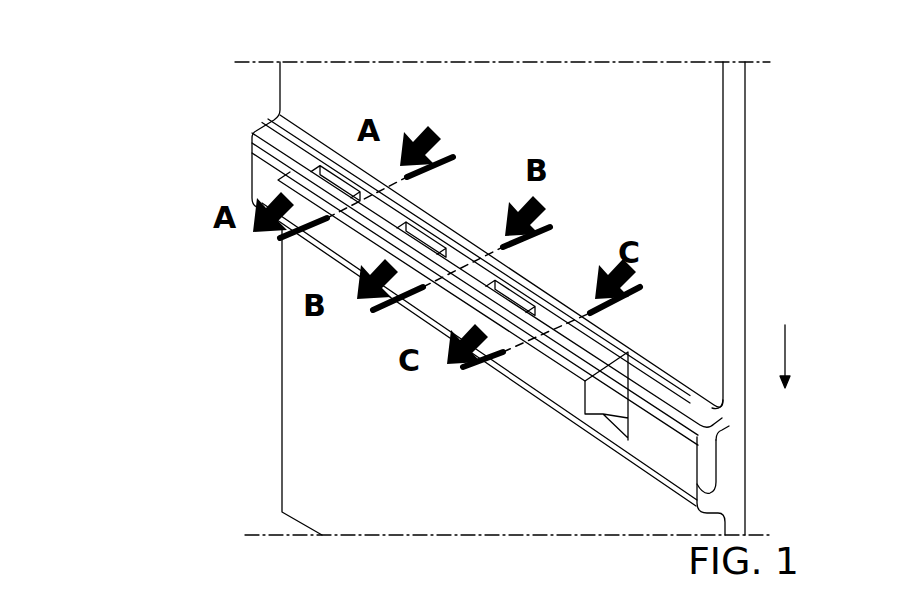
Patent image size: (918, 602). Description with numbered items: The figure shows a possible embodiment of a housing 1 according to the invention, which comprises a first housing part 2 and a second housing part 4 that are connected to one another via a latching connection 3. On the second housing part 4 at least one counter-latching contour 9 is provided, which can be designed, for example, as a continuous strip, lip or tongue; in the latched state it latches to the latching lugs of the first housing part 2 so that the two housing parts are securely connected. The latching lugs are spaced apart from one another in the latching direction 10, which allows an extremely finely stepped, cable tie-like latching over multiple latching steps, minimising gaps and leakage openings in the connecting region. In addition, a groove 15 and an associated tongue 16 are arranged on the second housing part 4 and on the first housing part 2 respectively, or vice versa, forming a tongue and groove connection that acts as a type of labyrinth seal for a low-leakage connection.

The housing 1 is at (766, 121).
The first housing part 2 is at (697, 255).
The latching connection 3 is at (331, 163).
The second housing part 4 is at (420, 498).
The counter-latching contour 9 is at (438, 262).
The latching direction 10 is at (789, 342).
The groove 15 is at (724, 488).
The tongue 16 is at (718, 446).